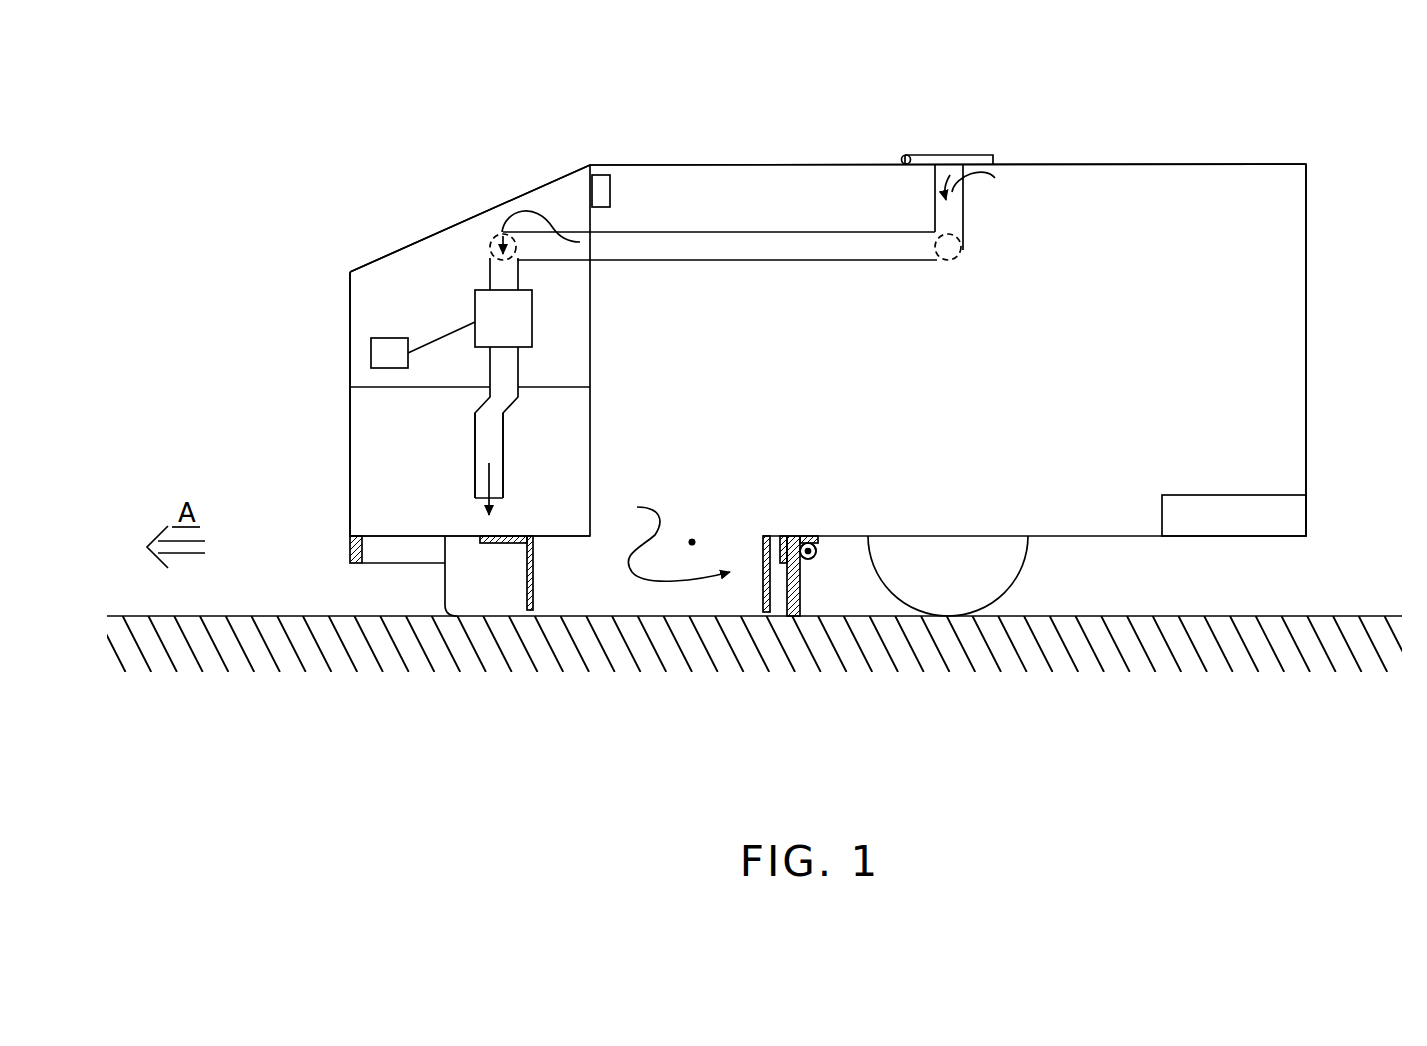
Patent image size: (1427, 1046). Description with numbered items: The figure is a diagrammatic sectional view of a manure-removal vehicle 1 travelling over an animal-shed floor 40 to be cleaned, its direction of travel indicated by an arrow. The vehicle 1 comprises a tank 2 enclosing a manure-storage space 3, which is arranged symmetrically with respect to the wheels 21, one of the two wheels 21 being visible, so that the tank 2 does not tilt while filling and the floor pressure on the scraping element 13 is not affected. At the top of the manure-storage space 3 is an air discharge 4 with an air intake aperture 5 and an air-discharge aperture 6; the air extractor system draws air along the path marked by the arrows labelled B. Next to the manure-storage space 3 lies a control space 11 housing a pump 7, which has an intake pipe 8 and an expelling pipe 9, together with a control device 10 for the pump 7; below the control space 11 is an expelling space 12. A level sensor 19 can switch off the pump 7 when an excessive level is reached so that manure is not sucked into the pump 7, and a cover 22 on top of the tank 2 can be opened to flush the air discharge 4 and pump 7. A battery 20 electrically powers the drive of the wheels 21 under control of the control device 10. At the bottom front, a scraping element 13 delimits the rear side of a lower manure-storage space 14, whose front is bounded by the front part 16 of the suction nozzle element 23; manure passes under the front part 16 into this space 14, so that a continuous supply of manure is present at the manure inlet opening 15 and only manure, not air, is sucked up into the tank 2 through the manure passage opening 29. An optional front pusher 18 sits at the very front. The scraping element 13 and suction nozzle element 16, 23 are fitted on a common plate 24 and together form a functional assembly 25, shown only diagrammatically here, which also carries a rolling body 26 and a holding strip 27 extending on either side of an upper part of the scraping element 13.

The manure-removal vehicle 1 is at (1353, 251).
The tank 2 is at (1170, 164).
The manure-storage space 3 is at (1024, 358).
The air discharge 4 is at (750, 232).
The air intake aperture 5 is at (948, 174).
The air-discharge aperture 6 is at (580, 242).
The pump 7 is at (488, 305).
The intake pipe 8 is at (499, 273).
The expelling pipe 9 is at (488, 435).
The control device 10 is at (387, 353).
The control space 11 is at (433, 303).
The expelling space 12 is at (419, 486).
The scraping element 13 is at (790, 597).
The manure-storage space 14 is at (497, 584).
The manure inlet opening 15 is at (692, 542).
The manure passage opening 29 is at (705, 532).
The front part of suction nozzle element 16 is at (530, 583).
The front pusher 18 is at (354, 556).
The level sensor 19 is at (598, 190).
The battery 20 is at (1205, 510).
The wheel 21 is at (972, 596).
The cover 22 is at (987, 155).
The suction nozzle element 23 is at (765, 578).
The common plate 24 is at (808, 540).
The functional assembly 25 is at (664, 536).
The rolling body 26 is at (812, 553).
The holding strip 27 is at (782, 563).
The animal-shed floor 40 is at (1293, 616).